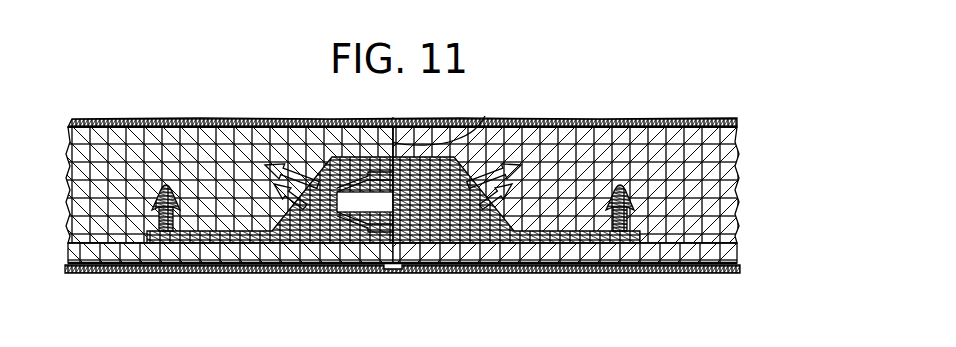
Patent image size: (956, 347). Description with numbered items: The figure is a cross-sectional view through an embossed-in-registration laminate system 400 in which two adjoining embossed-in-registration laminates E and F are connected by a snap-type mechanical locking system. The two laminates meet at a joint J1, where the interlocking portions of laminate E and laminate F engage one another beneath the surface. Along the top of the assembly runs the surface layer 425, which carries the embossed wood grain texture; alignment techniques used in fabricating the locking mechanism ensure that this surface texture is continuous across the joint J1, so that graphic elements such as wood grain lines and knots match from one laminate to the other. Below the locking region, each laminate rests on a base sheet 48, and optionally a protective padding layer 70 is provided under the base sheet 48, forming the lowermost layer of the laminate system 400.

The embossed-in-registration laminate system 400 is at (597, 102).
The top cover layer 425 is at (69, 121).
The base sheet 48 is at (75, 256).
The protective padding layer 70 is at (100, 273).
The joint line J1 is at (485, 116).
The embossed-in-registration laminate E is at (229, 185).
The embossed-in-registration laminate F is at (566, 185).